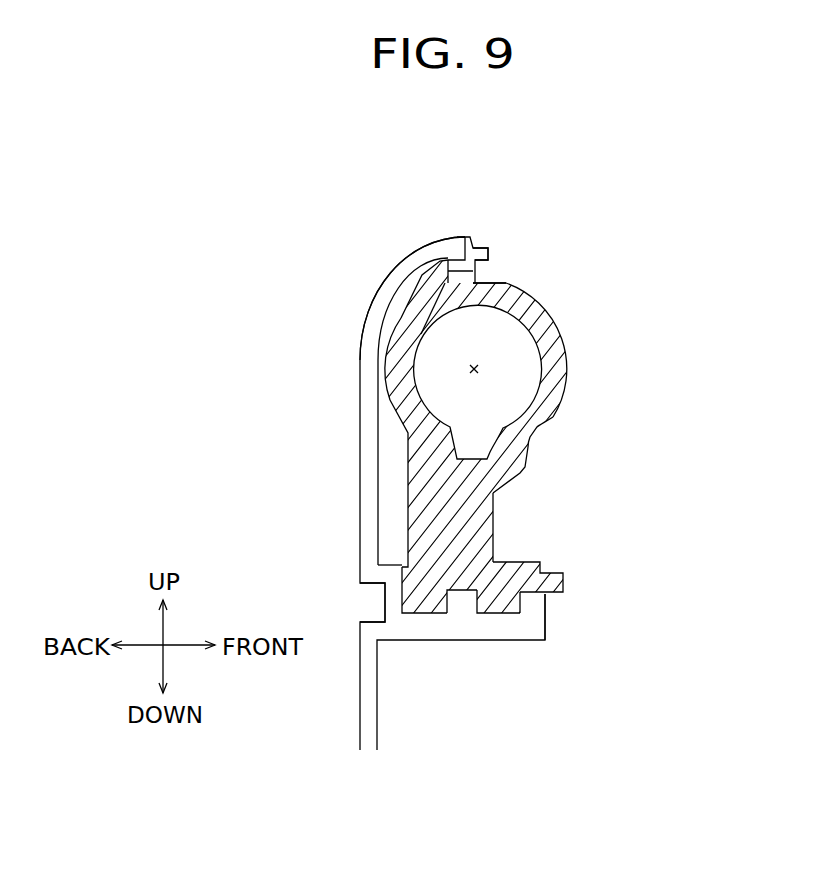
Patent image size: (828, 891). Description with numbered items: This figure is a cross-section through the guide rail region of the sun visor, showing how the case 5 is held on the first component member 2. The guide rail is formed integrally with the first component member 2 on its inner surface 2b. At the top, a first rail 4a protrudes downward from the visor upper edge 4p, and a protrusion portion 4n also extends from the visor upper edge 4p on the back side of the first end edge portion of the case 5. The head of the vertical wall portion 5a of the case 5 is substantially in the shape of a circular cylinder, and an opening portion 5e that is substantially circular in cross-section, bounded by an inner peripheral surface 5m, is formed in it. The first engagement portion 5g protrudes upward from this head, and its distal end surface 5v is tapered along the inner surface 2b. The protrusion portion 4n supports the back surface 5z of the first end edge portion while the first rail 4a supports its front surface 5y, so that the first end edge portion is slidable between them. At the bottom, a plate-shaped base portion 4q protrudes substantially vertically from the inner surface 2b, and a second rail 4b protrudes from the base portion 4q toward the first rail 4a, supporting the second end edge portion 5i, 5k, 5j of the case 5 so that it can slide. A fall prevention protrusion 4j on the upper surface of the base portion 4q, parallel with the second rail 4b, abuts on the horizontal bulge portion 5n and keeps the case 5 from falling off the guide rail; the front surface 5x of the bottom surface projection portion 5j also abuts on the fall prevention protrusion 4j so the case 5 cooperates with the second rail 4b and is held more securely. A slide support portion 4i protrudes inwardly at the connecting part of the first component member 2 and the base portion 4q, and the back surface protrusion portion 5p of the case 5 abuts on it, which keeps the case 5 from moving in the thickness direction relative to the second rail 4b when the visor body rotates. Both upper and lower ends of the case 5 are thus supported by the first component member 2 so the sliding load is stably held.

The first component member 2 is at (325, 383).
The inner surface 2b is at (386, 455).
The first rail 4a is at (488, 278).
The second rail 4b is at (470, 592).
The slide support portion 4i is at (390, 601).
The fall prevention protrusion 4j is at (540, 600).
The protrusion portion 4n is at (412, 292).
The visor upper edge 4p is at (467, 237).
The base portion 4q is at (535, 630).
The case 5 is at (611, 337).
The vertical wall portion 5a is at (561, 302).
The opening portion 5e is at (480, 369).
The first engagement portion 5g is at (446, 245).
The second end edge portion 5i is at (428, 613).
The bottom surface projection portion 5j is at (497, 613).
The second end edge portion 5k is at (455, 591).
The inner peripheral surface 5m is at (514, 403).
The horizontal bulge portion 5n is at (558, 572).
The back surface protrusion portion 5p is at (400, 578).
The distal end surface 5v is at (432, 246).
The front surface 5x is at (520, 605).
The front surface 5y is at (492, 262).
The back surface 5z is at (421, 274).